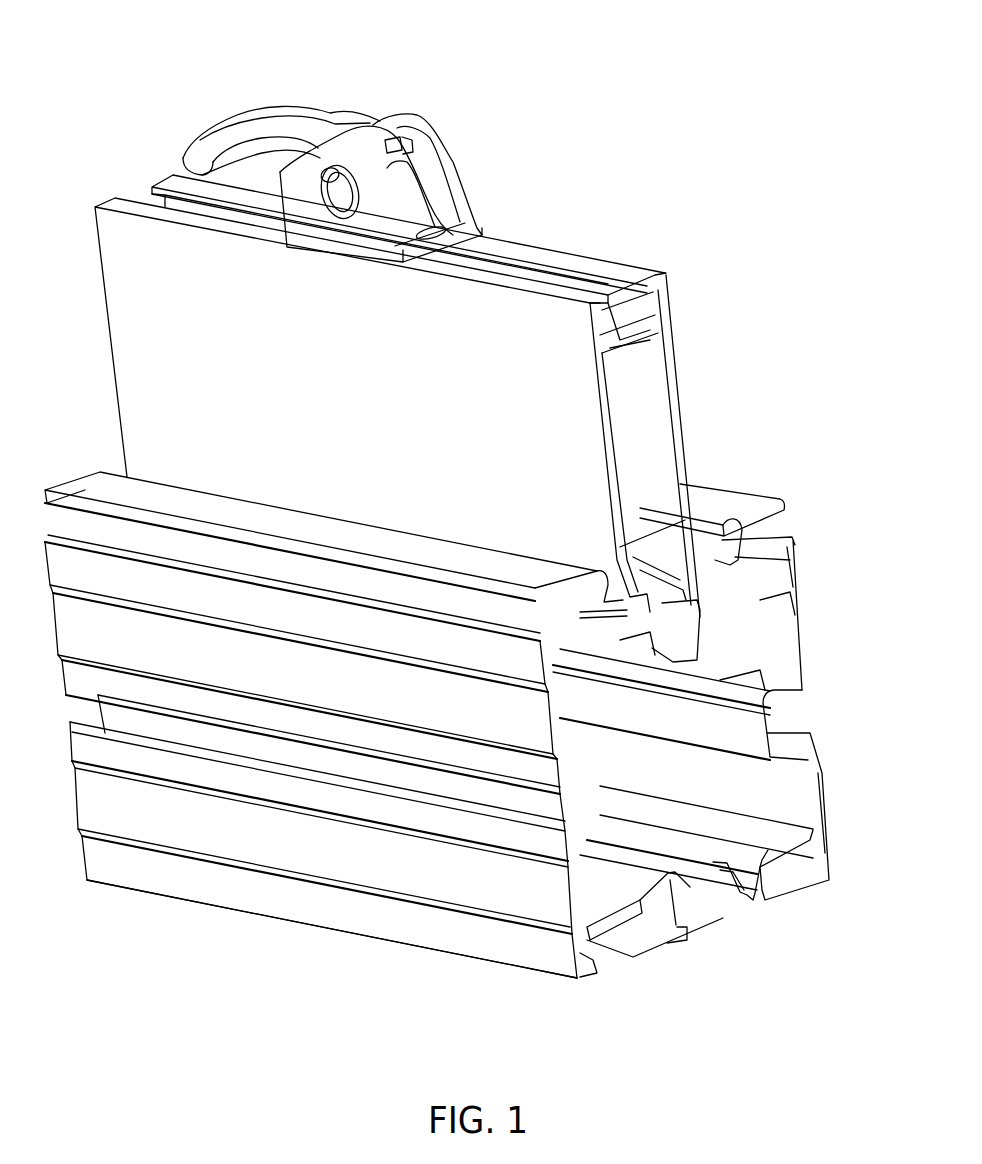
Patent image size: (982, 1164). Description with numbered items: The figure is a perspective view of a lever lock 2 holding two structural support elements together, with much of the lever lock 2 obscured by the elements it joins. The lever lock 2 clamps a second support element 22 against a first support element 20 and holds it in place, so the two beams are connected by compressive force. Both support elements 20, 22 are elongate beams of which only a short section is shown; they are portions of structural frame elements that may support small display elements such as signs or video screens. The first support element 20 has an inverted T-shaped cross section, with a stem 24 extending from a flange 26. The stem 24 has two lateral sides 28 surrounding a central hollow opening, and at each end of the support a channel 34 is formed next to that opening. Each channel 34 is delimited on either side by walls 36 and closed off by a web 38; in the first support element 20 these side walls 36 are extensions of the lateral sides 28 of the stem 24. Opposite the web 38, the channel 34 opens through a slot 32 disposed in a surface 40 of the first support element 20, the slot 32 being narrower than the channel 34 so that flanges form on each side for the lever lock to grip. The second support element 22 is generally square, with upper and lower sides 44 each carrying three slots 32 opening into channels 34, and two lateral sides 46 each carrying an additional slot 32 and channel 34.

The lever lock 2 is at (470, 78).
The first support element 20 is at (750, 386).
The second support element 22 is at (850, 706).
The stem 24 is at (697, 365).
The flange 26 is at (796, 500).
The lateral sides 28 is at (125, 333).
The slot 32 is at (545, 275).
The channel 34 is at (640, 305).
The walls 36 is at (675, 300).
The web 38 is at (650, 345).
The surface 40 is at (613, 268).
The upper and lower sides 44 is at (818, 550).
The lateral sides 46 is at (823, 790).